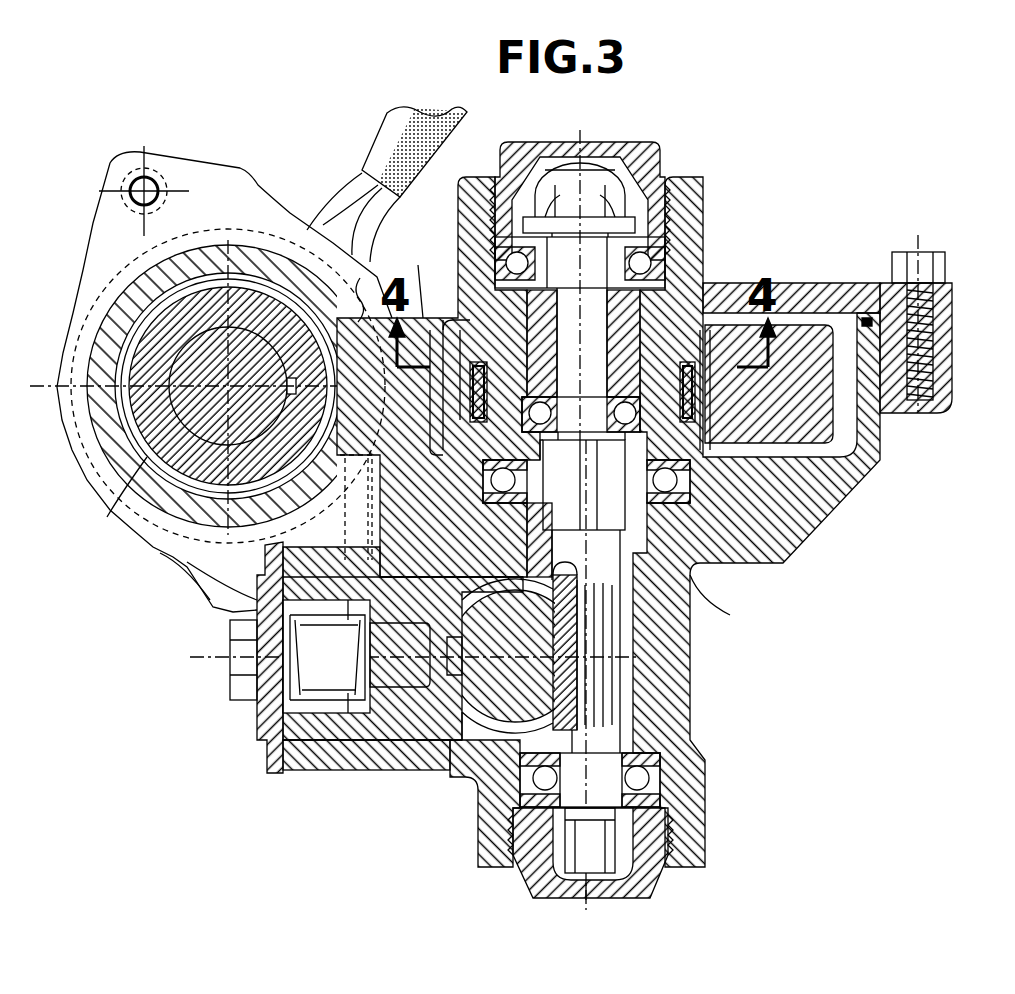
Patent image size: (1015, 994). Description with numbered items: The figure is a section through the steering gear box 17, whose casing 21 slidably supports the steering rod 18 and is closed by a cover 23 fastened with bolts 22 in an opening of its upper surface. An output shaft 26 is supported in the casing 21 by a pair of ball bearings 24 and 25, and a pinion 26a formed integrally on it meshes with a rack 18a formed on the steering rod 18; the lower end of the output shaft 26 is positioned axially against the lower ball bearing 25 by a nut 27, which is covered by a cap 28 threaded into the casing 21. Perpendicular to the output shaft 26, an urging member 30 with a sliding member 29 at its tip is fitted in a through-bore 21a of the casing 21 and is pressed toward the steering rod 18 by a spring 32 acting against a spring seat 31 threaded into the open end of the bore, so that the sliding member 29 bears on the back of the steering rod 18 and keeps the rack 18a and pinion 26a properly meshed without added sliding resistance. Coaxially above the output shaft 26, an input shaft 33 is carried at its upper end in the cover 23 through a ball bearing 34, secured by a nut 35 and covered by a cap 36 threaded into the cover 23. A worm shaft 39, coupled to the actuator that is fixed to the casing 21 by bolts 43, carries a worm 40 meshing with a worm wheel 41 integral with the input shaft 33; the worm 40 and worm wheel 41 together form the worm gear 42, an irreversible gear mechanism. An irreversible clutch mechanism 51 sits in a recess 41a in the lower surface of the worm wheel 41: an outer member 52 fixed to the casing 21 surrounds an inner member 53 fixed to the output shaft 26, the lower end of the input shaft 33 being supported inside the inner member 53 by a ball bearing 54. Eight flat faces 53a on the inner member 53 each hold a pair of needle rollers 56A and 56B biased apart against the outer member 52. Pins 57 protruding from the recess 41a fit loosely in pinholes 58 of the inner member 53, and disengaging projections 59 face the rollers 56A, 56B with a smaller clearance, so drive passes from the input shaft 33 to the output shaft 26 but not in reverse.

The steering gear box 17 is at (849, 598).
The steering rod 18 is at (518, 648).
The rack 18a is at (603, 663).
The casing 21 is at (882, 466).
The through-bore 21a is at (372, 745).
The bolts 22 is at (925, 255).
The cover 23 is at (825, 283).
The ball bearing 24 is at (492, 503).
The ball bearing 25 is at (650, 778).
The output shaft 26 is at (703, 590).
The pinion 26a is at (625, 695).
The nut 27 is at (563, 857).
The cap 28 is at (650, 885).
The sliding member 29 is at (463, 742).
The urging member 30 is at (415, 752).
The spring seat 31 is at (260, 728).
The spring 32 is at (366, 678).
The input shaft 33 is at (707, 280).
The ball bearing 34 is at (497, 253).
The nut 35 is at (545, 190).
The cap 36 is at (640, 148).
The worm shaft 39 is at (220, 382).
The worm 40 is at (147, 457).
The worm wheel 41 is at (187, 562).
The recess 41a is at (415, 278).
The worm gear 42 is at (97, 612).
The bolts 43 is at (135, 182).
The irreversible clutch mechanism 51 is at (710, 340).
The outer member 52 is at (712, 412).
The inner member 53 is at (626, 553).
The flat faces 53a is at (458, 396).
The ball bearing 54 is at (549, 409).
The needle roller 56A is at (462, 378).
The needle roller 56B is at (697, 373).
The pins 57 is at (530, 378).
The pinholes 58 is at (500, 352).
The disengaging projections 59 is at (546, 511).